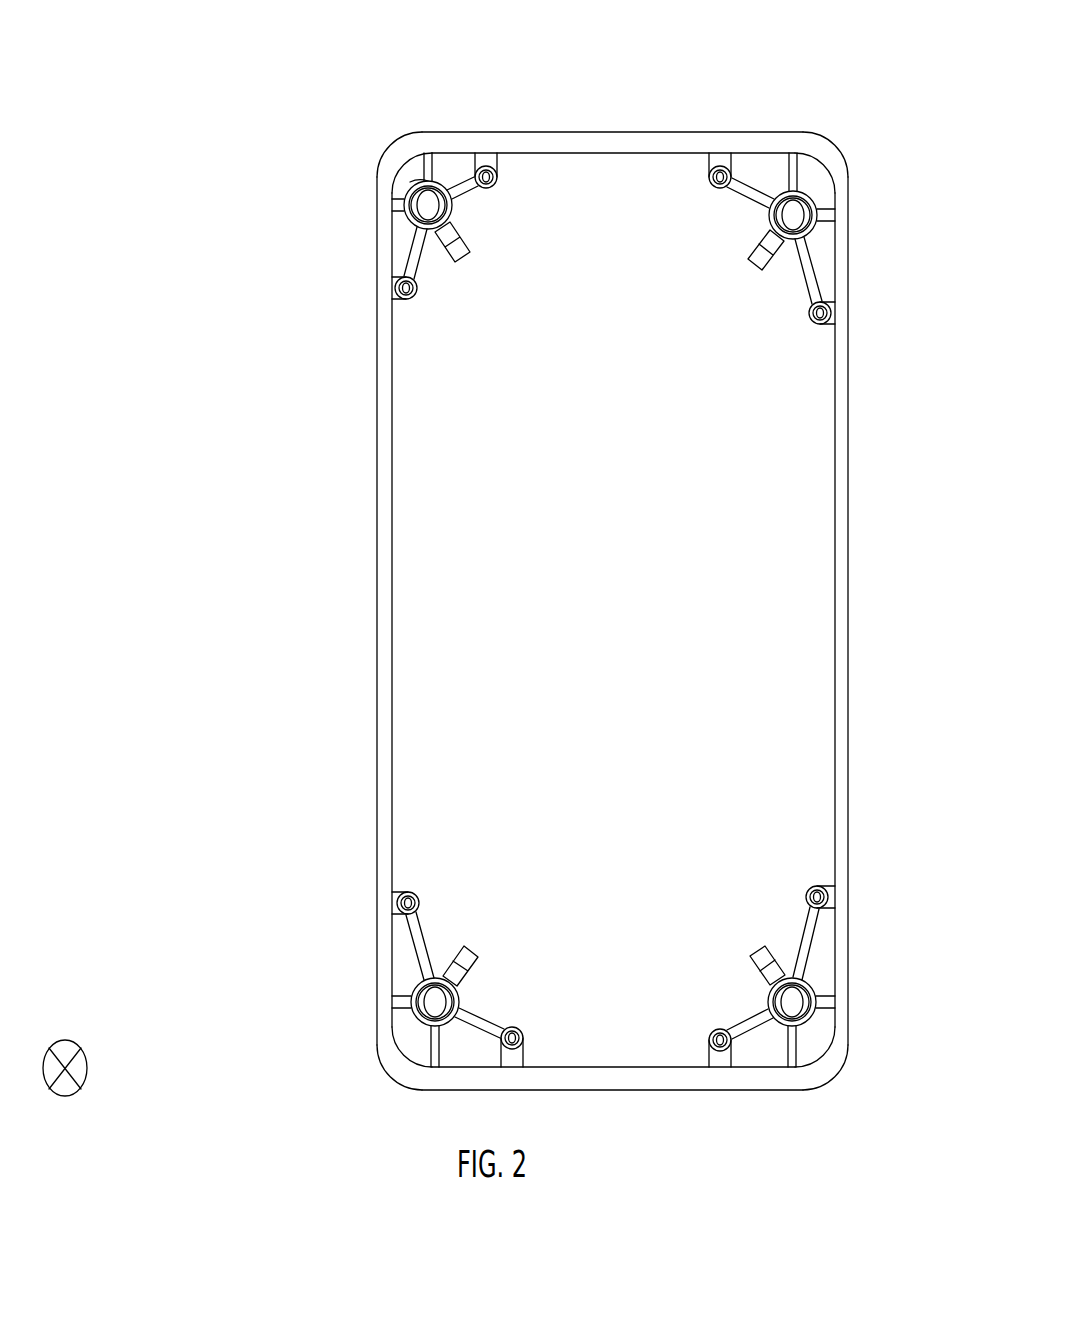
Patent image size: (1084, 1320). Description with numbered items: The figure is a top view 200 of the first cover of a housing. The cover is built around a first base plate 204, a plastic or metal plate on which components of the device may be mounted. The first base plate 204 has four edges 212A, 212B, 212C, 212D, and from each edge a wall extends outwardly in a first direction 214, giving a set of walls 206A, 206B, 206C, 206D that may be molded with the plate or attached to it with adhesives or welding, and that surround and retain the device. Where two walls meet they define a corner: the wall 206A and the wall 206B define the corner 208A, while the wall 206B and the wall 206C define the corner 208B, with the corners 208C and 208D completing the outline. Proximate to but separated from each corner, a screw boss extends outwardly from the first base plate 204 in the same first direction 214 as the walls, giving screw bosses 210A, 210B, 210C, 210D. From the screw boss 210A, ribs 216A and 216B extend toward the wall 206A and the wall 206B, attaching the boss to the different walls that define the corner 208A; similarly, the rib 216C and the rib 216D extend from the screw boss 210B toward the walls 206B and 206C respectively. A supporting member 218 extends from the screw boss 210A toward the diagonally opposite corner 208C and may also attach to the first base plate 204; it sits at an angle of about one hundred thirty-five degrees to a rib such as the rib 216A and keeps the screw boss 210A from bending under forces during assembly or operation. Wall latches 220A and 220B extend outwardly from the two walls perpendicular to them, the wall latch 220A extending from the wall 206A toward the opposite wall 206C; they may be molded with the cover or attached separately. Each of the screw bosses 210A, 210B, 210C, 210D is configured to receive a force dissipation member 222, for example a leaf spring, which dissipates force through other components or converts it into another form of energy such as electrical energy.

The top view 200 is at (222, 196).
The first base plate 204 is at (441, 638).
The wall 206A is at (377, 470).
The wall 206B is at (652, 131).
The wall 206C is at (849, 553).
The wall 206D is at (575, 1092).
The corner 208A is at (397, 160).
The corner 208B is at (845, 152).
The corner 208C is at (845, 1062).
The corner 208D is at (383, 1073).
The screw boss 210A is at (452, 210).
The screw boss 210B is at (773, 220).
The screw boss 210C is at (798, 975).
The screw boss 210D is at (459, 996).
The edge 212A is at (393, 483).
The edge 212B is at (635, 157).
The edge 212C is at (834, 518).
The edge 212D is at (655, 1065).
The first direction 214 is at (66, 1041).
The rib 216A is at (395, 208).
The rib 216B is at (428, 165).
The rib 216C is at (795, 152).
The rib 216D is at (830, 222).
The supporting member 218 is at (447, 262).
The wall latch 220A is at (396, 285).
The wall latch 220B is at (497, 172).
The force dissipation member 222 is at (410, 182).